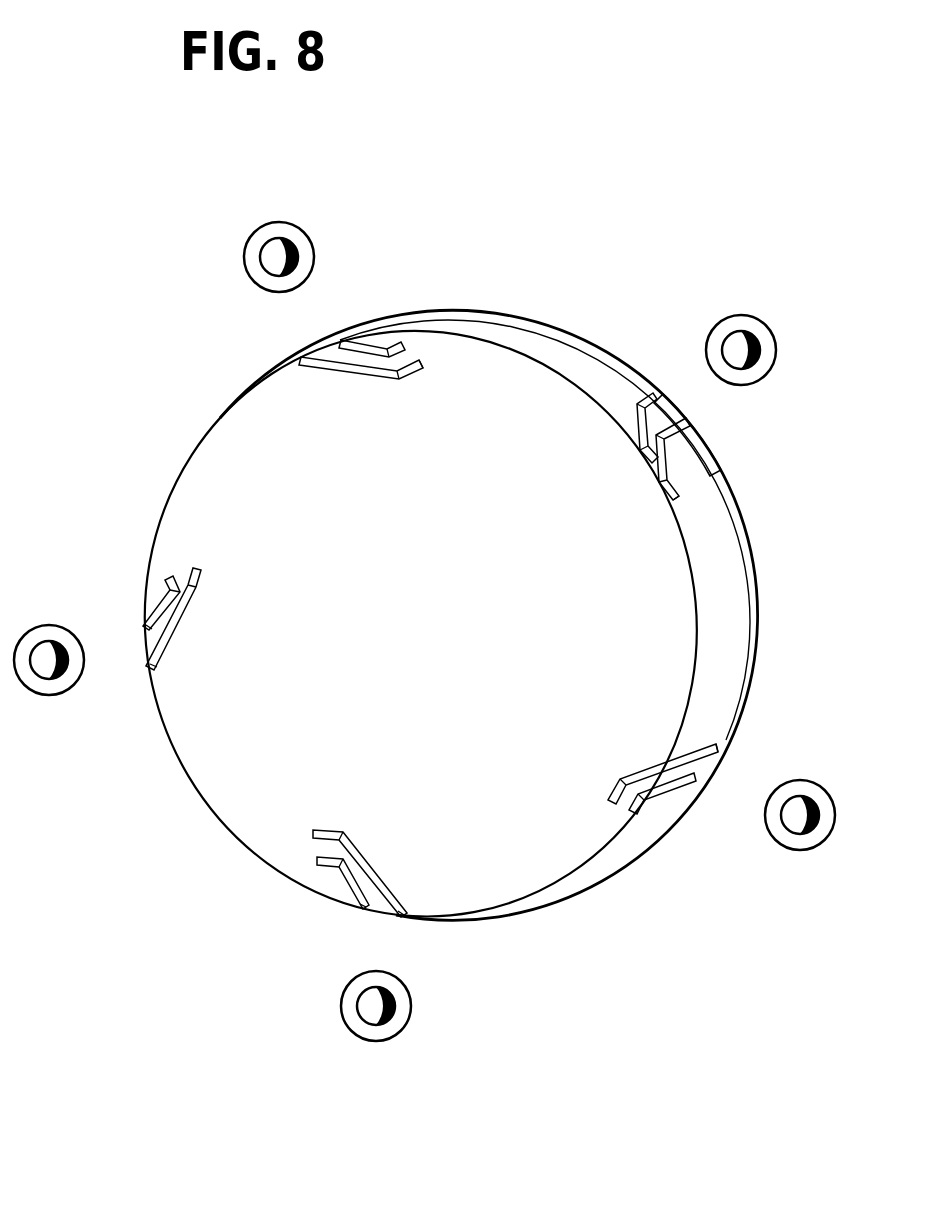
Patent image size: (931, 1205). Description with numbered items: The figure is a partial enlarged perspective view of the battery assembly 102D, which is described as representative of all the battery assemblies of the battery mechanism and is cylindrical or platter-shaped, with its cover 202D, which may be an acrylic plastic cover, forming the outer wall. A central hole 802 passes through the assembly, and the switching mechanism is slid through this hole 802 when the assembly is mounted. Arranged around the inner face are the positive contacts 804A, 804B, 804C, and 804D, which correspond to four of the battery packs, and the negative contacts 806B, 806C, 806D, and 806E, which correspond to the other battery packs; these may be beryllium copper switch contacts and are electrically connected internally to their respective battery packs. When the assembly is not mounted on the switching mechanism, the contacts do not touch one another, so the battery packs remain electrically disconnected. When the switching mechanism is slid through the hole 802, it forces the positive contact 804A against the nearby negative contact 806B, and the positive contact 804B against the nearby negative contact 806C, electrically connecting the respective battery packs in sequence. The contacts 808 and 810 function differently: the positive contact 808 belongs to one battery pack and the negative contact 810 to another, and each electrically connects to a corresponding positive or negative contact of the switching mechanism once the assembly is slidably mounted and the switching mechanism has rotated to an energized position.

The battery assembly 102D is at (603, 143).
The cover 202D is at (550, 329).
The hole 802 is at (450, 608).
The positive contact 804A is at (656, 757).
The positive contact 804B is at (380, 860).
The positive contact 804C is at (204, 604).
The positive contact 804D is at (368, 379).
The negative contact 806B is at (618, 826).
The negative contact 806C is at (328, 868).
The negative contact 806D is at (167, 582).
The negative contact 806E is at (372, 348).
The positive contact 808 is at (637, 432).
The negative contact 810 is at (660, 484).